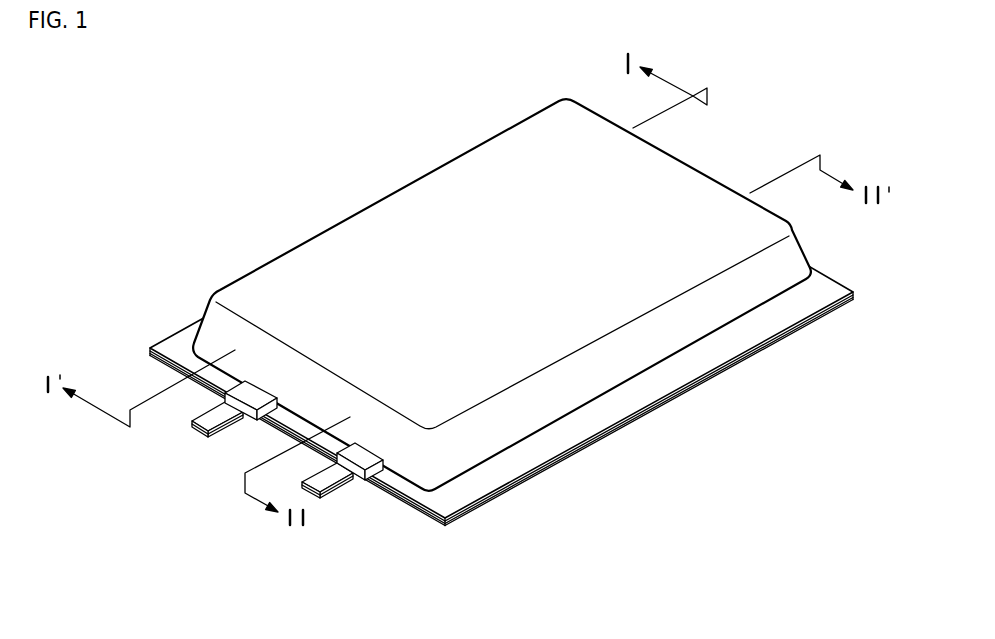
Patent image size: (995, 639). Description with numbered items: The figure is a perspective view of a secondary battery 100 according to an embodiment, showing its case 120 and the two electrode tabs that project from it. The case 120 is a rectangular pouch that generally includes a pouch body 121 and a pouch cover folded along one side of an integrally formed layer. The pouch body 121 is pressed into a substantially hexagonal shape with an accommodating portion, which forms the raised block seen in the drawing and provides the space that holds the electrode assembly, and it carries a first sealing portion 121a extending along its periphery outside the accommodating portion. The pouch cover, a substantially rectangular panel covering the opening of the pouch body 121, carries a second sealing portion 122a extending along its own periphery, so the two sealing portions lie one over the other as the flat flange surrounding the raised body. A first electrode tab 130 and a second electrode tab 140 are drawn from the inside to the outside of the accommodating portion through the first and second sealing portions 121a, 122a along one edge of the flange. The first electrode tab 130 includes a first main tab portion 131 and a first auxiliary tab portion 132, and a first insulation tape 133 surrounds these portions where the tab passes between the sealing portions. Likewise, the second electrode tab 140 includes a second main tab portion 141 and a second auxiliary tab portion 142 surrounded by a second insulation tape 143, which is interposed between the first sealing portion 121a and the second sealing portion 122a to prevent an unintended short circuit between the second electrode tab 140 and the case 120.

The secondary battery 100 is at (113, 97).
The case 120 is at (490, 312).
The pouch body 121 is at (682, 338).
The first sealing portion 121a is at (645, 397).
The second sealing portion 122a is at (630, 427).
The first electrode tab 130 is at (189, 460).
The first main tab portion 131 is at (200, 432).
The first auxiliary tab portion 132 is at (190, 420).
The first insulation tape 133 is at (239, 435).
The second electrode tab 140 is at (371, 529).
The second main tab portion 141 is at (352, 488).
The second auxiliary tab portion 142 is at (321, 492).
The second insulation tape 143 is at (389, 504).